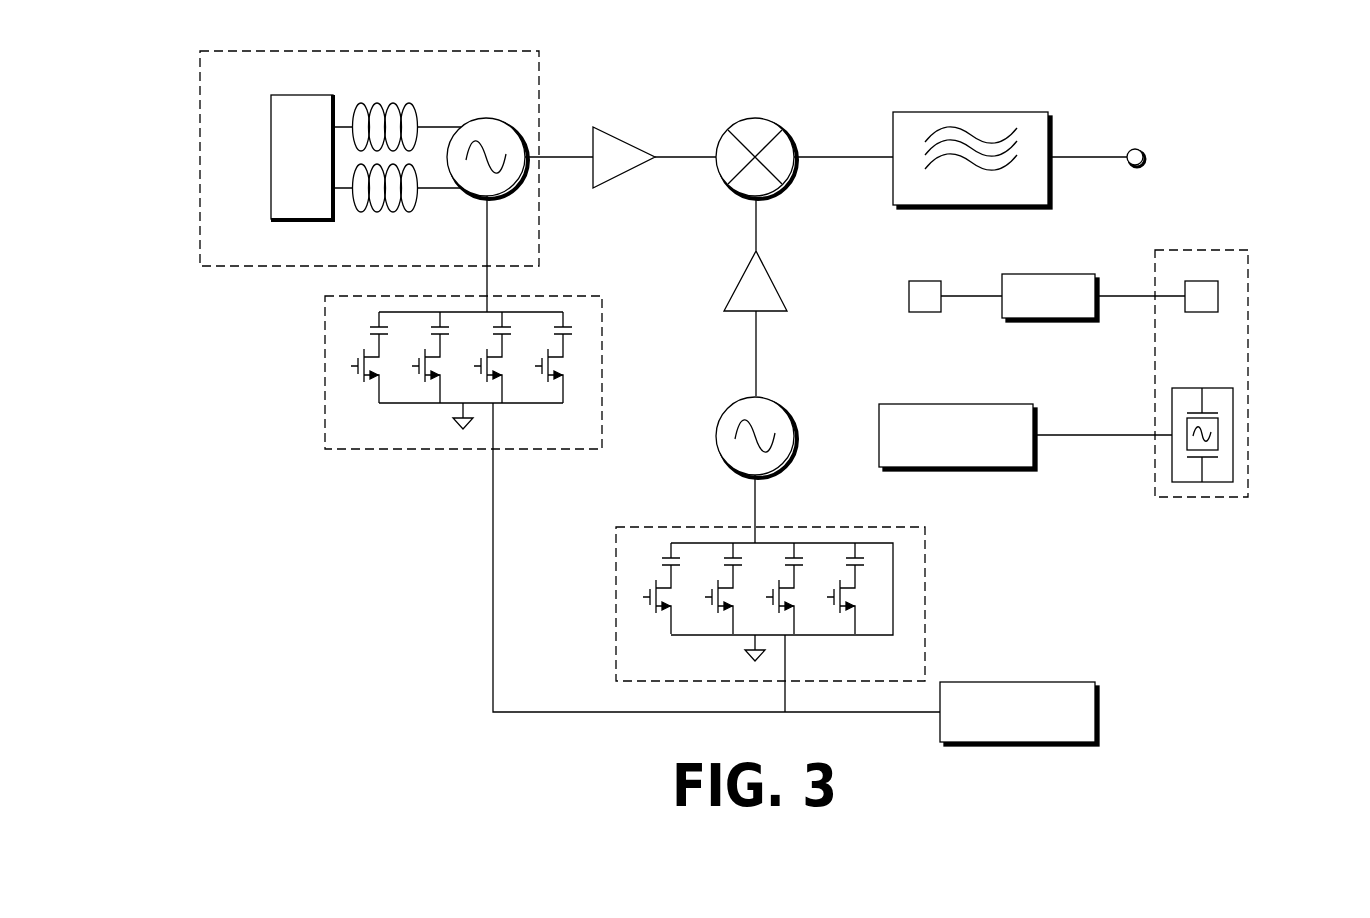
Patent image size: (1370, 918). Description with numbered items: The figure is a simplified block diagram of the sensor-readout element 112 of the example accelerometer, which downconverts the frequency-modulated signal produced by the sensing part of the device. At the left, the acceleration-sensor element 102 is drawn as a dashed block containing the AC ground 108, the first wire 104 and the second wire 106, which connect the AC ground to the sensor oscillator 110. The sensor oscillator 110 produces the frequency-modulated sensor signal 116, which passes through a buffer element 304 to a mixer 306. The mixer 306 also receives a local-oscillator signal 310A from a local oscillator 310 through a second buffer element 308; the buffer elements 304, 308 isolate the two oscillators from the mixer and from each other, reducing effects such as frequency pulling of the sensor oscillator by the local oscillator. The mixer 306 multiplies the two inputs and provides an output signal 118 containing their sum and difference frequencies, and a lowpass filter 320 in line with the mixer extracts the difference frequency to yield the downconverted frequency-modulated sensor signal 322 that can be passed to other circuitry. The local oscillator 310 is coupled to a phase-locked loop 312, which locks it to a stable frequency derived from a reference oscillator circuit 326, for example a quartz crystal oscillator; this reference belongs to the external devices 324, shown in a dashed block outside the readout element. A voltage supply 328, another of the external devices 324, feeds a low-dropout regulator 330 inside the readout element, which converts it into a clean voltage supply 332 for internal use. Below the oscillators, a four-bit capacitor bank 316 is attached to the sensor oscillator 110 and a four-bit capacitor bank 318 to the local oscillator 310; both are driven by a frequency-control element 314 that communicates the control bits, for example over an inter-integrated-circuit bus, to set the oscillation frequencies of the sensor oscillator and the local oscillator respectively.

The acceleration-sensor element 102 is at (400, 51).
The first wire 104 is at (452, 127).
The second wire 106 is at (435, 190).
The AC ground 108 is at (300, 167).
The sensor oscillator 110 is at (515, 124).
The sensor-readout element 112 is at (948, 60).
The frequency-modulated sensor signal 116 is at (567, 158).
The output signal 118 is at (847, 160).
The buffer element 304 is at (632, 142).
The mixer 306 is at (788, 135).
The buffer element 308 is at (773, 278).
The local oscillator 310 is at (773, 403).
The local-oscillator signal 310A is at (753, 372).
The phase-locked loop 312 is at (995, 404).
The frequency-control element 314 is at (1098, 715).
The capacitor bank 316 is at (377, 450).
The capacitor bank 318 is at (925, 618).
The lowpass filter 320 is at (1052, 130).
The downconverted frequency-modulated sensor signal 322 is at (1145, 160).
The external devices 324 is at (1249, 310).
The reference oscillator circuit 326 is at (1218, 437).
The voltage supply 328 is at (1222, 281).
The low-dropout regulator 330 is at (1097, 280).
The clean voltage supply 332 is at (948, 282).